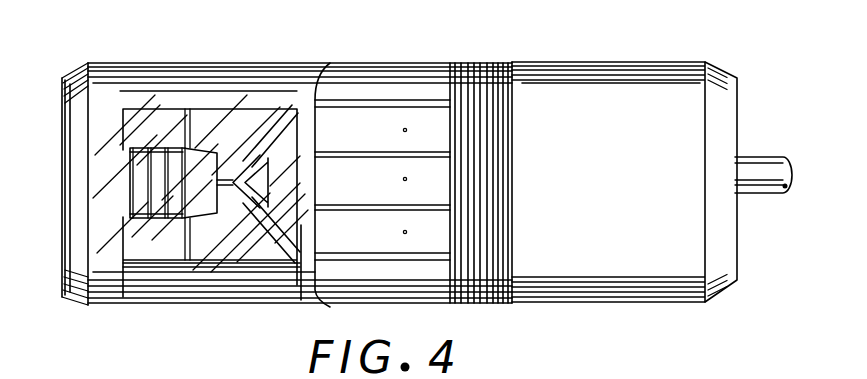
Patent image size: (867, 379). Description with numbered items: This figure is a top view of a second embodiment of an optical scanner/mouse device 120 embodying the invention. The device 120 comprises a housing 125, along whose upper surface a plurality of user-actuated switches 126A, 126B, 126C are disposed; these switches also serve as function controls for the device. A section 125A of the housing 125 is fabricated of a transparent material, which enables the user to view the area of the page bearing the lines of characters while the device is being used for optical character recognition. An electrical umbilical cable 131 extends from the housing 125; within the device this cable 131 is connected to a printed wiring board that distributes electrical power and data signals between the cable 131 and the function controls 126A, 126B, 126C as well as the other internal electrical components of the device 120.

The optical scanner/mouse device 120 is at (437, 54).
The housing 125 is at (597, 61).
The transparent section of housing 125A is at (198, 120).
The user-actuated switch 126A is at (343, 113).
The user-actuated switch 126B is at (347, 178).
The user-actuated switch 126C is at (330, 245).
The electrical umbilical cable 131 is at (763, 163).